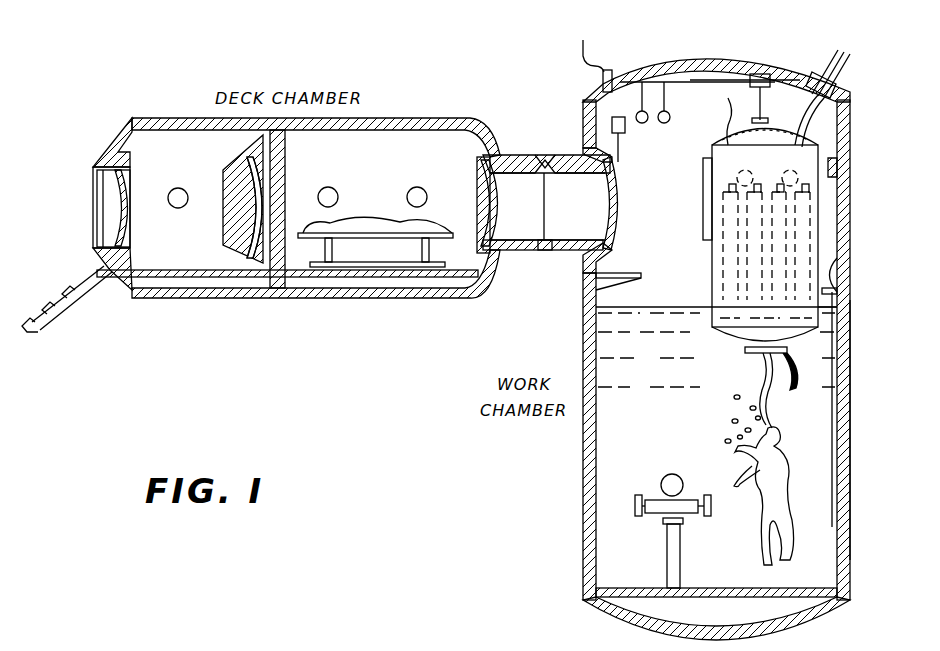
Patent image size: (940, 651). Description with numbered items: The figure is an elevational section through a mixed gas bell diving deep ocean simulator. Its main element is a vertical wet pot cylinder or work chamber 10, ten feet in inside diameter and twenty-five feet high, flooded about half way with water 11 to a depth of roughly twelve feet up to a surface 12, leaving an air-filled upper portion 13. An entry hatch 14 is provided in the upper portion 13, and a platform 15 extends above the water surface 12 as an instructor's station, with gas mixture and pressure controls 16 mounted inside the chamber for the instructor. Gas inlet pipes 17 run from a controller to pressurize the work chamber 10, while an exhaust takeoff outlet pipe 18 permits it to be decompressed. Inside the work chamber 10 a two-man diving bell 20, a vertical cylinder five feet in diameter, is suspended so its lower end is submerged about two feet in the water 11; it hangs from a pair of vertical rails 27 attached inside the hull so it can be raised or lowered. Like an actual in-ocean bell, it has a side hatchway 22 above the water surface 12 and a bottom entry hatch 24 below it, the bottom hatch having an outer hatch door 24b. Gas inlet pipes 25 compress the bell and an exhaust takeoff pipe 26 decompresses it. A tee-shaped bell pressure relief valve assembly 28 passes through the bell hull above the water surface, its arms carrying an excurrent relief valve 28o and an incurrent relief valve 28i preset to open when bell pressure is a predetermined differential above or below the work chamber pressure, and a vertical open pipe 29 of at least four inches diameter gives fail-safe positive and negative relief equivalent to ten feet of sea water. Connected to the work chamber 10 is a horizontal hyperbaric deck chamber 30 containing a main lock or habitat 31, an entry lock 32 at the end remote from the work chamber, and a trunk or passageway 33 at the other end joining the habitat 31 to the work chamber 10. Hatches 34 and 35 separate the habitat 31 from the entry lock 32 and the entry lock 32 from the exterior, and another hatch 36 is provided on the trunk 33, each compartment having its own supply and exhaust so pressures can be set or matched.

The work chamber 10 is at (542, 445).
The water 11 is at (812, 471).
The surface 12 is at (706, 312).
The air-filled upper portion 13 is at (717, 117).
The entry hatch 14 is at (608, 188).
The platform 15 is at (636, 279).
The gas mixture and pressure controls 16 is at (676, 134).
The gas inlet pipes 17 is at (848, 78).
The exhaust takeoff outlet pipe 18 is at (612, 74).
The diving bell 20 is at (820, 248).
The side hatchway 22 is at (703, 200).
The bottom entry hatch 24 is at (752, 356).
The outer hatch door 24b is at (790, 388).
The gas inlet pipes 25 is at (800, 123).
The exhaust takeoff pipe 26 is at (737, 120).
The vertical rails 27 is at (768, 97).
The bell pressure relief valve assembly 28 is at (840, 266).
The incurrent relief valve 28i is at (840, 290).
The excurrent relief valve 28o is at (833, 307).
The vertical open pipe 29 is at (822, 398).
The deck chamber 30 is at (287, 326).
The main lock or habitat 31 is at (374, 266).
The entry lock 32 is at (176, 272).
The trunk or passageway 33 is at (527, 238).
The hatch 34 is at (240, 193).
The hatch 35 is at (116, 212).
The hatch 36 is at (484, 204).